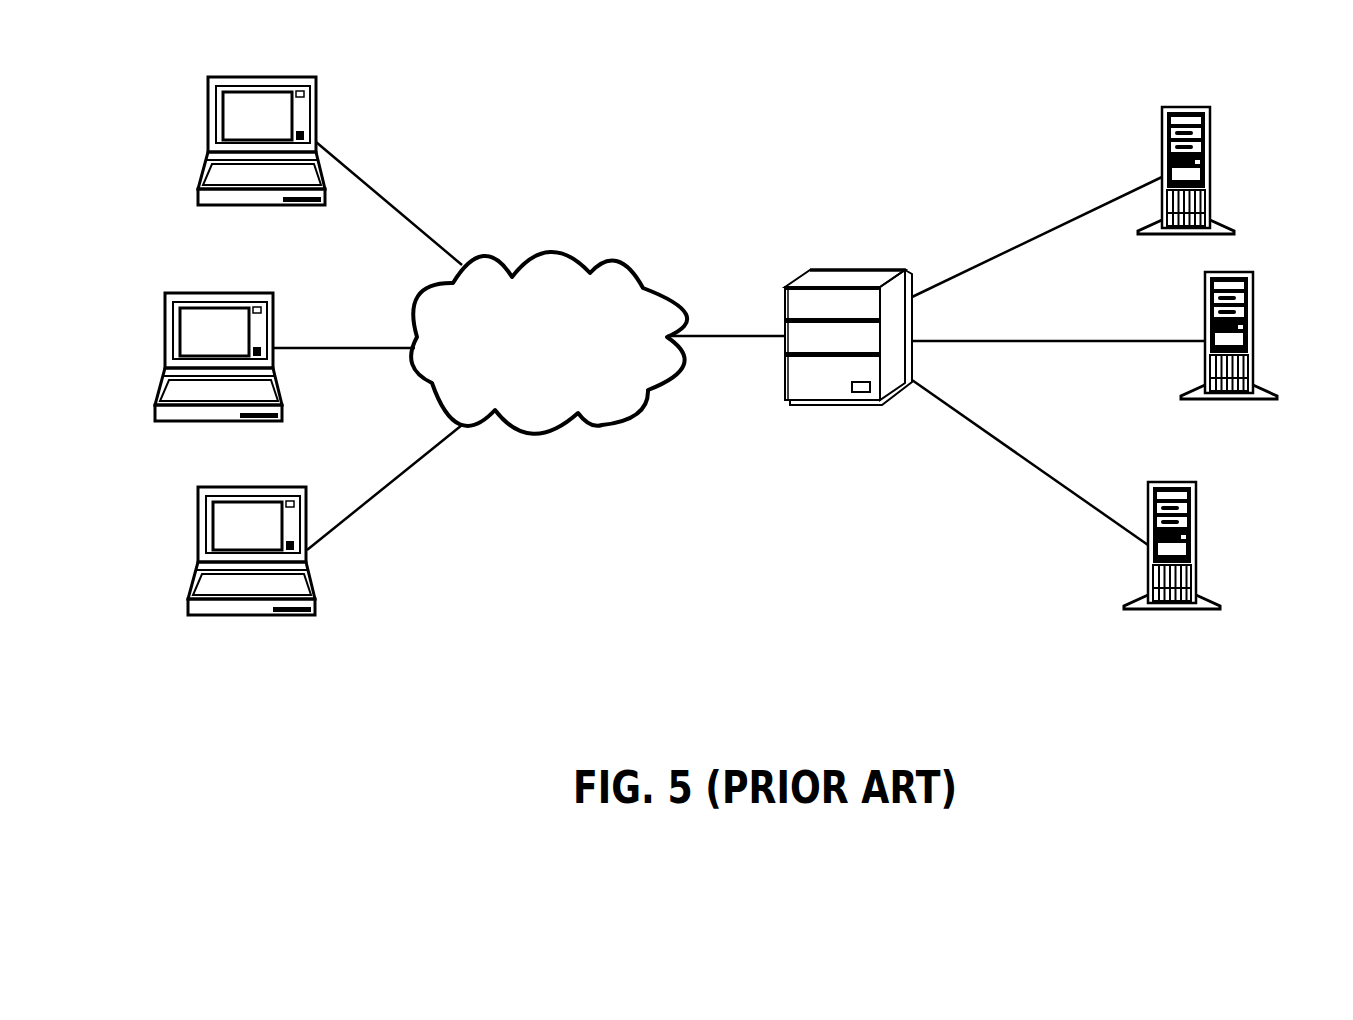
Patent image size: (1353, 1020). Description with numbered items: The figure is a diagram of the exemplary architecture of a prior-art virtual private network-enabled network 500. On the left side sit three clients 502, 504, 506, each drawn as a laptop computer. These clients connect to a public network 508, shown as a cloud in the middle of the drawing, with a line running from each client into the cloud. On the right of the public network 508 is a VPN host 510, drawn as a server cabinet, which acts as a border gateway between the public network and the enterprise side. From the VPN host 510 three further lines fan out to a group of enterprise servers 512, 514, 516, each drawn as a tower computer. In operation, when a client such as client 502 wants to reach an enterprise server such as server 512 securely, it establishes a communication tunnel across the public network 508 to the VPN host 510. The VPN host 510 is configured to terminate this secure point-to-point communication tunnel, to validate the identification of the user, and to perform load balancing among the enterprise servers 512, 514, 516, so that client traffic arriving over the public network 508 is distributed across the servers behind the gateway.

The VPN-enabled network 500 is at (749, 699).
The client 502 is at (208, 142).
The client 504 is at (165, 325).
The client 506 is at (198, 550).
The public network 508 is at (549, 343).
The VPN host 510 is at (848, 270).
The enterprise server 512 is at (1213, 168).
The enterprise server 514 is at (1258, 338).
The enterprise server 516 is at (1197, 547).